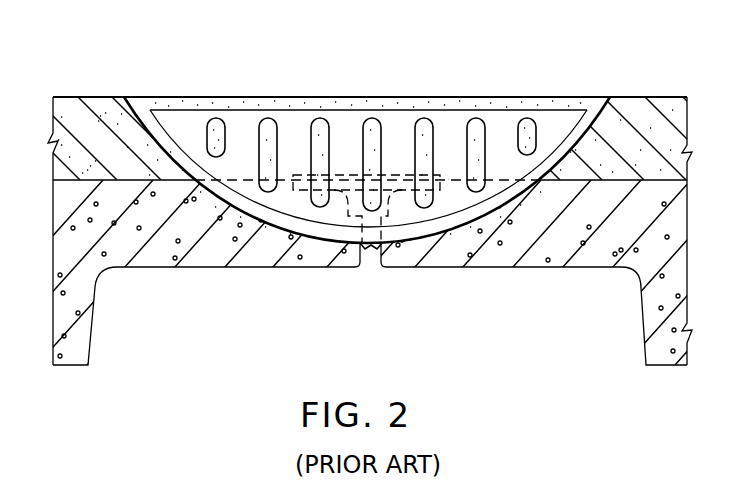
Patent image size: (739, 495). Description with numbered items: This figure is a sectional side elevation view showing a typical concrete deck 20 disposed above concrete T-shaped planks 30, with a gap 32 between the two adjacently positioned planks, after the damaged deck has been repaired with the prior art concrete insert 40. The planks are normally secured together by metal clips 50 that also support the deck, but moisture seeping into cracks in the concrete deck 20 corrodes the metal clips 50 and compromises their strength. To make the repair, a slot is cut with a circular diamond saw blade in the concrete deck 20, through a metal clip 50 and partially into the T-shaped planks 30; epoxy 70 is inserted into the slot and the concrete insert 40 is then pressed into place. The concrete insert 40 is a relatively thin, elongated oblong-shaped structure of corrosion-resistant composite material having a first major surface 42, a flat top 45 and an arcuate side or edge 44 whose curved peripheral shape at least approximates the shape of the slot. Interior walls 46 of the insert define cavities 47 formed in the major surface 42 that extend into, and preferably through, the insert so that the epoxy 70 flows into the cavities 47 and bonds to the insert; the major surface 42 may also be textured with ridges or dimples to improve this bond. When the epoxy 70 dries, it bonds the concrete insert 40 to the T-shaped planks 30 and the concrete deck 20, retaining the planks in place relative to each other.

The concrete deck 20 is at (78, 97).
The concrete T-shaped planks 30 is at (80, 333).
The gap 32 is at (367, 257).
The concrete insert 40 is at (452, 110).
The first major surface 42 is at (182, 125).
The arcuate side or edge 44 is at (248, 212).
The flat top 45 is at (507, 110).
The interior walls 46 is at (402, 143).
The cavities 47 is at (320, 126).
The metal clips 50 is at (342, 175).
The epoxy 70 is at (213, 123).